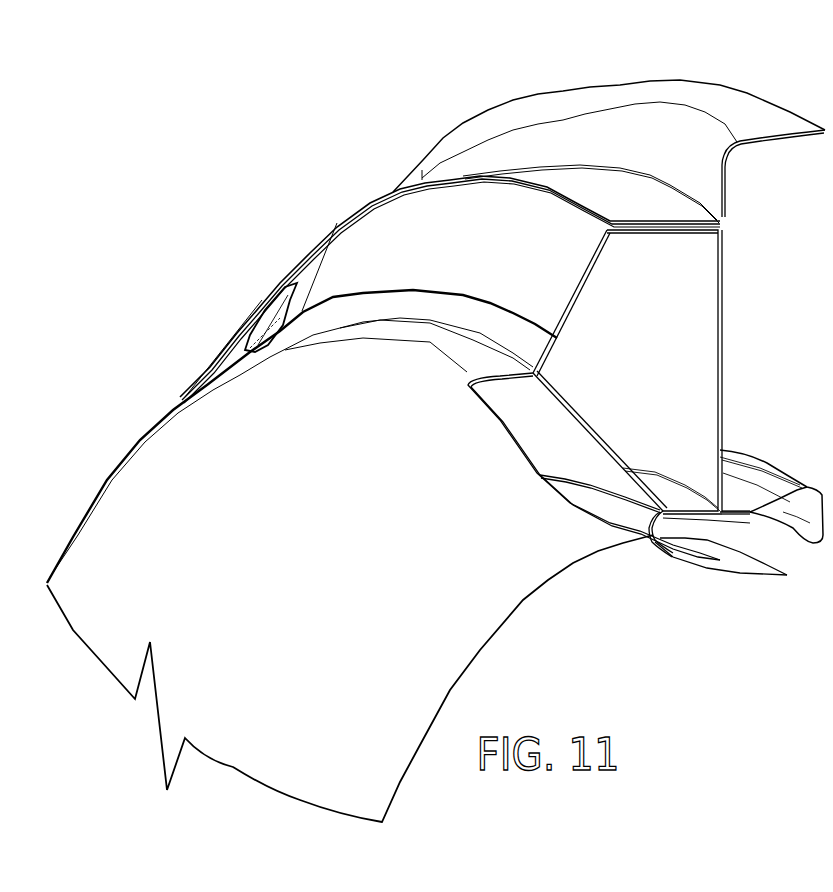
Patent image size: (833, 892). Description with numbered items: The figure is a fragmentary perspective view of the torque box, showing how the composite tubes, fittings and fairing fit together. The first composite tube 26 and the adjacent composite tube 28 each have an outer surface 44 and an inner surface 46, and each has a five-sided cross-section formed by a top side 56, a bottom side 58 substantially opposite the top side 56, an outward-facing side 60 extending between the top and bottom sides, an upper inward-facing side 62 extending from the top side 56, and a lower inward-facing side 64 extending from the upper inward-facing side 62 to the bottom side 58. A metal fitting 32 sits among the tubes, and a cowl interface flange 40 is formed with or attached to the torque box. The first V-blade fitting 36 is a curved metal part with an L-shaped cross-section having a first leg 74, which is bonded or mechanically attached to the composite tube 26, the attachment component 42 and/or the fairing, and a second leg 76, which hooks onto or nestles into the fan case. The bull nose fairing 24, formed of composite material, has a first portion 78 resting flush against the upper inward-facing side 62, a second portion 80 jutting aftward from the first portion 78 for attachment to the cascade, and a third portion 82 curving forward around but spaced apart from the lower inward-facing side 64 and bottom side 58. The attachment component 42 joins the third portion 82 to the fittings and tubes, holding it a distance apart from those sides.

The bull nose fairing 24 is at (438, 593).
The first composite tube 26 is at (665, 372).
The composite tube 28 is at (227, 347).
The metal fitting 32 is at (280, 287).
The first V-blade fitting 36 is at (776, 512).
The cowl interface flange 40 is at (750, 118).
The attachment component 42 is at (673, 543).
The outer surface 44 is at (448, 246).
The inner surface 46 is at (642, 384).
The top side 56 is at (658, 232).
The bottom side 58 is at (687, 507).
The outward-facing side 60 is at (722, 372).
The upper inward-facing side 62 is at (573, 303).
The lower inward-facing side 64 is at (607, 447).
The first leg 74 is at (740, 497).
The second leg 76 is at (797, 533).
The first portion 78 is at (407, 305).
The second portion 80 is at (460, 355).
The third portion 82 is at (167, 493).